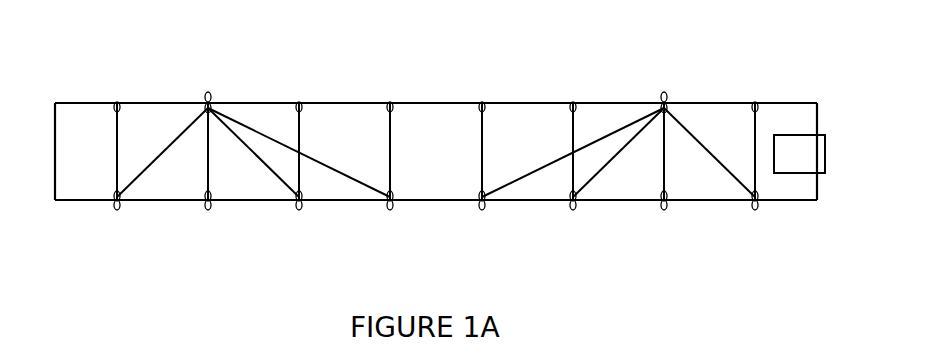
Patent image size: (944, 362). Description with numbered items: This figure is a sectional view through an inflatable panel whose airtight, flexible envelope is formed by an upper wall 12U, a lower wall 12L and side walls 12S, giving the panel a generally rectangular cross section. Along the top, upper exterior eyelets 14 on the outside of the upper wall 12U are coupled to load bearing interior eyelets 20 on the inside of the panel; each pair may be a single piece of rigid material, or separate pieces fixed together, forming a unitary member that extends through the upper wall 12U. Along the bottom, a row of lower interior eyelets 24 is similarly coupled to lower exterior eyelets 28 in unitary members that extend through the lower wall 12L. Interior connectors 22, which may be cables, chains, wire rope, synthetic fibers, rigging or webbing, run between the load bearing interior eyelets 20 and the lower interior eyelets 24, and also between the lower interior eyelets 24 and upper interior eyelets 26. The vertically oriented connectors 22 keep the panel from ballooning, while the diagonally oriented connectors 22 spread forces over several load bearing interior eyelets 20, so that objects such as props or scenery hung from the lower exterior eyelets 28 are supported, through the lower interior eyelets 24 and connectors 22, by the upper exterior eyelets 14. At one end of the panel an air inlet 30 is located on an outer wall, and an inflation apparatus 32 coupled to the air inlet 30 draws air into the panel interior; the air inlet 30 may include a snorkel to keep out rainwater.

The upper wall 12U is at (779, 104).
The lower wall 12L is at (763, 203).
The side walls 12S is at (815, 119).
The upper exterior eyelets 14 is at (208, 92).
The load bearing interior eyelets 20 is at (203, 105).
The interior connectors 22 is at (92, 161).
The lower interior eyelets 24 is at (117, 197).
The upper interior eyelets 26 is at (755, 106).
The lower exterior eyelets 28 is at (117, 205).
The air inlet 30 is at (826, 137).
The inflation apparatus 32 is at (787, 174).